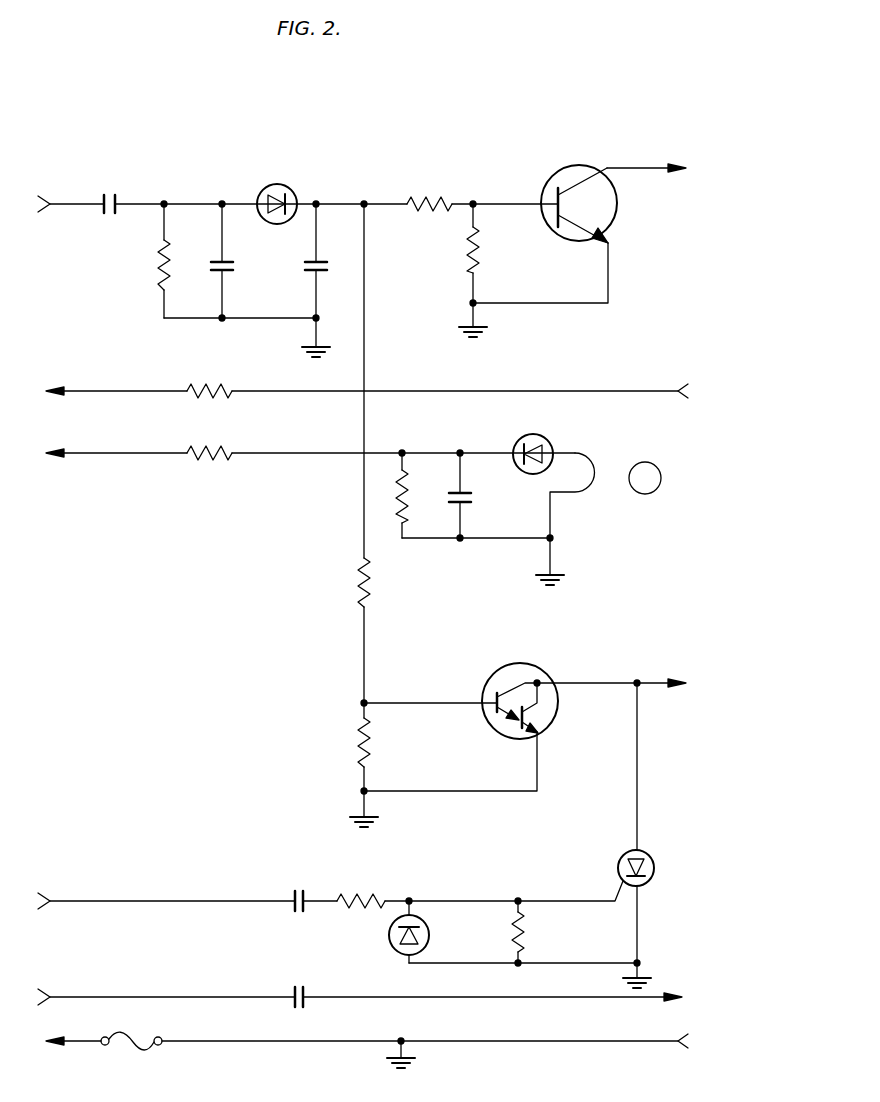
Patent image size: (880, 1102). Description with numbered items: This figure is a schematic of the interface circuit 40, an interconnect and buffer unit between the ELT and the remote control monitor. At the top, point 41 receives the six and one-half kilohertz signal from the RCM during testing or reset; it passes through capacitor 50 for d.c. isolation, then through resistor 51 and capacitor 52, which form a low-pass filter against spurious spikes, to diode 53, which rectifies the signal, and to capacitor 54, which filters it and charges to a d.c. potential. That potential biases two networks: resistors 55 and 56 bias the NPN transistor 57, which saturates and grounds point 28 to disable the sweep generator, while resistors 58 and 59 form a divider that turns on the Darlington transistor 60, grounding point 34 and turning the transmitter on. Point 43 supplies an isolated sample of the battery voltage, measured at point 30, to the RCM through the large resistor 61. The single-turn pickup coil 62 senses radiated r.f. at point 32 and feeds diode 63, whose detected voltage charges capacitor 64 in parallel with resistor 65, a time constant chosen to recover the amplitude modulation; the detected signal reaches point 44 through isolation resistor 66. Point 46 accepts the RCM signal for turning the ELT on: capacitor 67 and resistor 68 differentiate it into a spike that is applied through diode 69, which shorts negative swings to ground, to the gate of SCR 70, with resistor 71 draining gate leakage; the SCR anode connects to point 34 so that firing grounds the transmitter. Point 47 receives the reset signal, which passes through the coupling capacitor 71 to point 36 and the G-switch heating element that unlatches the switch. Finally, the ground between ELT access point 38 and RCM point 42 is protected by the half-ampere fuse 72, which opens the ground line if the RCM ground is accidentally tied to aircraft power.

The point 28 is at (645, 168).
The point 30 is at (625, 391).
The point 32 is at (645, 478).
The point 34 is at (645, 683).
The point 36 is at (612, 997).
The access point 38 is at (585, 1041).
The interface circuit 40 is at (241, 126).
The point 41 is at (63, 204).
The point 42 is at (84, 1041).
The point 43 is at (88, 391).
The point 44 is at (108, 453).
The point 46 is at (93, 901).
The point 47 is at (78, 997).
The capacitor 50 is at (116, 196).
The resistor 51 is at (158, 272).
The capacitor 52 is at (214, 270).
The diode 53 is at (284, 185).
The capacitor 54 is at (308, 271).
The resistor 55 is at (438, 197).
The resistor 56 is at (480, 266).
The transistor 57 is at (616, 216).
The resistor 58 is at (372, 593).
The resistor 59 is at (372, 746).
The transistor 60 is at (557, 708).
The resistor 61 is at (213, 385).
The coil 62 is at (593, 466).
The diode 63 is at (545, 437).
The capacitor 64 is at (470, 494).
The resistor 65 is at (412, 491).
The resistor 66 is at (232, 447).
The capacitor 67 is at (292, 908).
The resistor 68 is at (365, 894).
The diode 69 is at (429, 936).
The SCR 70 is at (649, 856).
The resistor 71 is at (527, 945).
The fuse 72 is at (128, 1043).